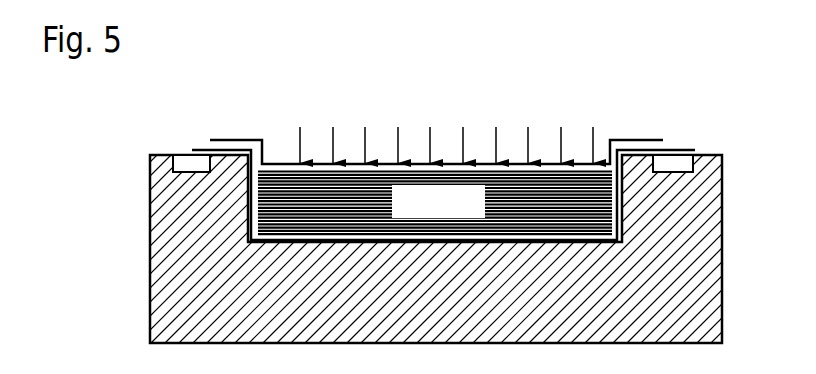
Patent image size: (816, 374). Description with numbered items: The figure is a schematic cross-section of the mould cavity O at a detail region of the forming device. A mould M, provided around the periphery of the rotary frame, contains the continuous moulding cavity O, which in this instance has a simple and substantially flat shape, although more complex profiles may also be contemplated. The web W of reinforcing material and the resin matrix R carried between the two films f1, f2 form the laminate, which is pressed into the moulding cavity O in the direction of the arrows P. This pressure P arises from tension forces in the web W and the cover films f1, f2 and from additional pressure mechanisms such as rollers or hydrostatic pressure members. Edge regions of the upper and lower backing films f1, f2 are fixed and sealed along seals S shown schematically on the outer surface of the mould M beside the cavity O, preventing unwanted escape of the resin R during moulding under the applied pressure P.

The mould M is at (708, 284).
The seal S is at (178, 168).
The upper backing film f1 is at (652, 112).
The lower backing film f2 is at (697, 123).
The web W is at (435, 157).
The resin matrix R is at (476, 170).
The pressure P is at (431, 127).
The moulding cavity O is at (352, 131).